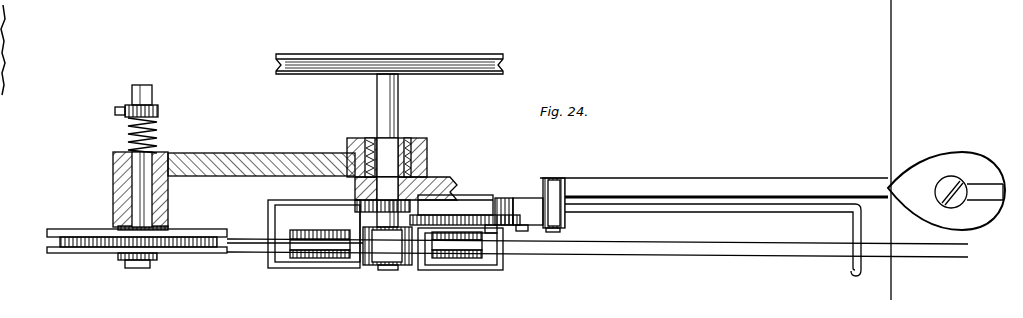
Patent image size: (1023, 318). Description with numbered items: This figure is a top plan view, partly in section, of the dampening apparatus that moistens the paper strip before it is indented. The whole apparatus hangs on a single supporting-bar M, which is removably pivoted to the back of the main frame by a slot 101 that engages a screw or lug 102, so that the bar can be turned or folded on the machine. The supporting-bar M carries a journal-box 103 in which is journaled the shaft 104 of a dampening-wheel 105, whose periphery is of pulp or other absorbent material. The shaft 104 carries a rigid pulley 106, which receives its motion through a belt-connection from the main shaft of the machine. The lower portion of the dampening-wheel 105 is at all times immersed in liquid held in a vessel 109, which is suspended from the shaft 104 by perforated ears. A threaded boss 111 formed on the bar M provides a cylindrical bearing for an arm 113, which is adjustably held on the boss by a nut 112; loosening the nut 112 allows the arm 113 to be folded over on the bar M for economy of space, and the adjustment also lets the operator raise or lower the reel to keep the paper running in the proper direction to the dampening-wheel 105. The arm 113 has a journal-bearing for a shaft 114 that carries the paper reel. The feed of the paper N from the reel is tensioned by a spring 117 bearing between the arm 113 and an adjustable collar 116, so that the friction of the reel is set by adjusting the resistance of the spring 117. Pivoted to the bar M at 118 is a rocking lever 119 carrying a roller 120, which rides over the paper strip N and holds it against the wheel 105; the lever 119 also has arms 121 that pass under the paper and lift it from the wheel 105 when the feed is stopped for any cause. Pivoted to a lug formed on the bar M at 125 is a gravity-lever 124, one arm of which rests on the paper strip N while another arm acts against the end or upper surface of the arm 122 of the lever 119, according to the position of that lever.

The slot 101 is at (985, 200).
The screw or lug 102 is at (969, 184).
The journal-box 103 is at (437, 178).
The shaft 104 is at (398, 111).
The dampening-wheel 105 is at (300, 255).
The rigid pulley 106 is at (406, 65).
The vessel 109 is at (345, 265).
The threaded boss 111 is at (400, 140).
The nut 112 is at (427, 145).
The arm 113 is at (201, 204).
The shaft 114 is at (152, 197).
The adjustable collar 116 is at (151, 101).
The spring 117 is at (159, 135).
The pivot 118 is at (505, 218).
The rocking lever 119 is at (465, 218).
The roller 120 is at (387, 248).
The arms 121 is at (455, 258).
The arm 122 is at (533, 225).
The gravity-lever 124 is at (713, 240).
The lug 125 is at (568, 205).
The supporting-bar M is at (714, 180).
The paper N is at (597, 257).